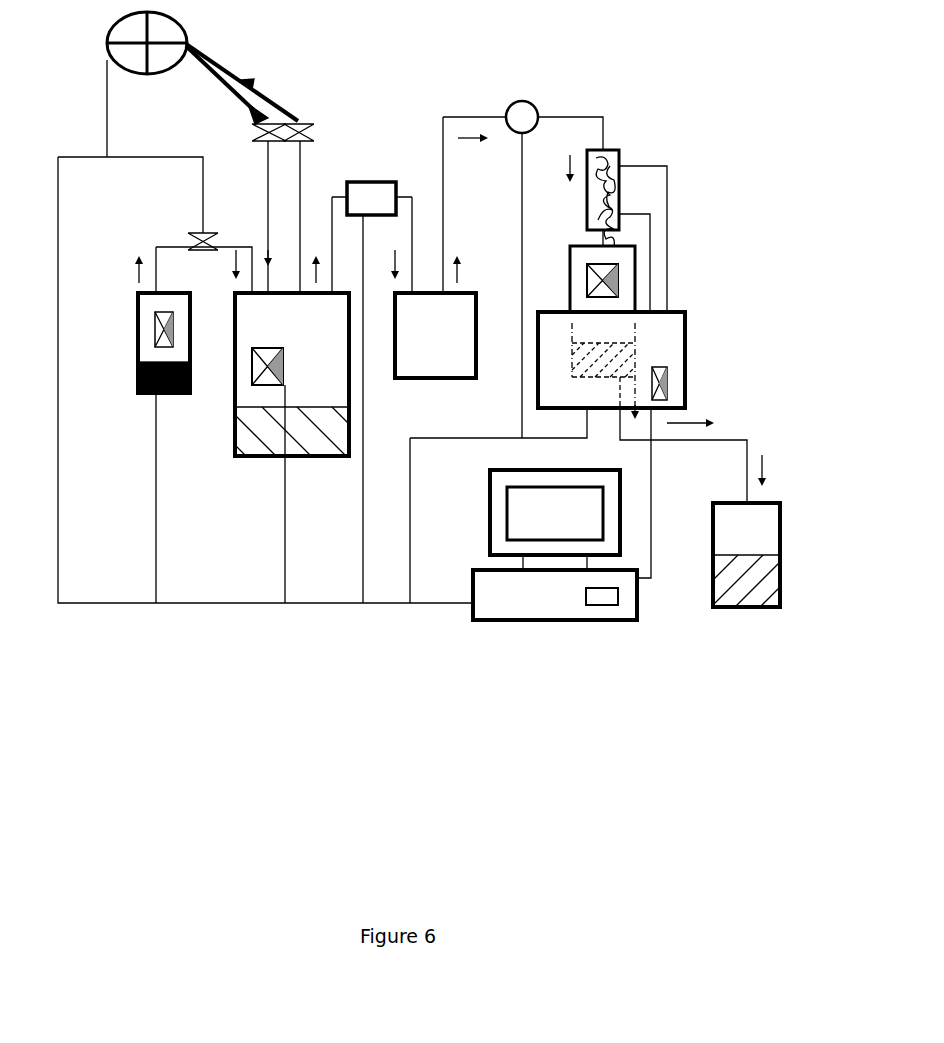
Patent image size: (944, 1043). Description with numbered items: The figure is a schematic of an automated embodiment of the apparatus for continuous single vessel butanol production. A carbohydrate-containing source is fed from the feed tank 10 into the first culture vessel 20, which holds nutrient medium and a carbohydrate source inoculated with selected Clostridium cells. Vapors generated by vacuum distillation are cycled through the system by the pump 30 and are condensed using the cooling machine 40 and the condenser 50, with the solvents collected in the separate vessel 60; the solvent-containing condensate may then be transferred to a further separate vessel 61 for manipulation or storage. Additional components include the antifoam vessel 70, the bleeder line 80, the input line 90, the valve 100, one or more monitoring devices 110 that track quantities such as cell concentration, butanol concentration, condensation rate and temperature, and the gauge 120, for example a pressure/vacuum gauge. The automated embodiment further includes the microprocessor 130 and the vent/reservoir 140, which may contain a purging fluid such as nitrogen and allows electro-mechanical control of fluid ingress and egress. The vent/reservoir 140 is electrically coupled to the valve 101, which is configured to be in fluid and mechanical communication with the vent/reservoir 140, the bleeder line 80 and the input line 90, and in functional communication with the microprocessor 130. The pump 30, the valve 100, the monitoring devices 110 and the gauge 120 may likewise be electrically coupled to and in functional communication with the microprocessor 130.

The feed tank 10 is at (140, 398).
The first (culture) vessel 20 is at (268, 458).
The pump 30 is at (380, 182).
The cooling machine 40 is at (685, 368).
The condenser 50 is at (620, 148).
The separate vessel 60 is at (570, 283).
The separate vessel 61 is at (780, 532).
The antifoam vessel 70 is at (427, 380).
The bleeder line 80 is at (312, 138).
The input line 90 is at (265, 150).
The valve 100 is at (195, 237).
The valve 101 is at (284, 122).
The monitoring device 110 is at (667, 367).
The gauge 120 is at (540, 100).
The microprocessor 130 is at (622, 520).
The vent/reservoir 140 is at (108, 28).